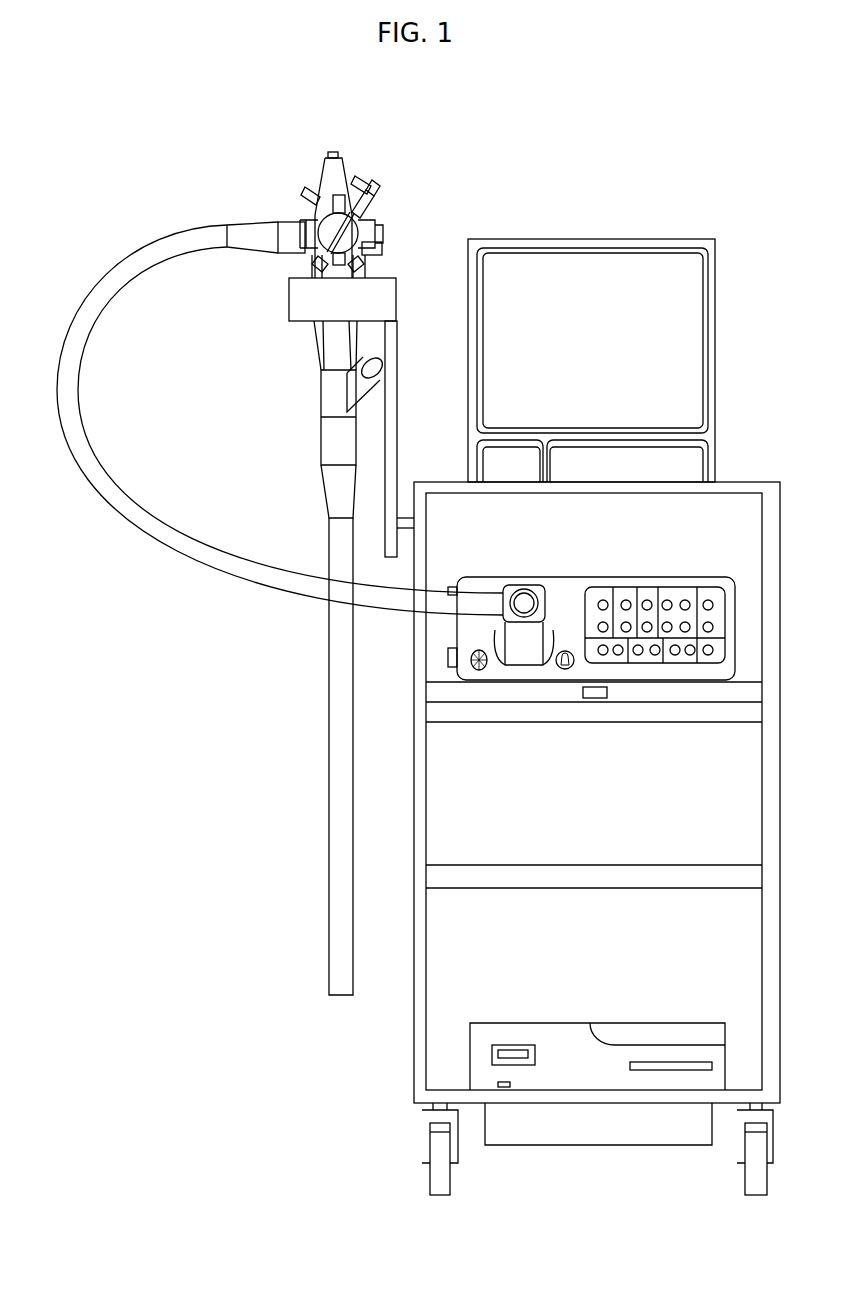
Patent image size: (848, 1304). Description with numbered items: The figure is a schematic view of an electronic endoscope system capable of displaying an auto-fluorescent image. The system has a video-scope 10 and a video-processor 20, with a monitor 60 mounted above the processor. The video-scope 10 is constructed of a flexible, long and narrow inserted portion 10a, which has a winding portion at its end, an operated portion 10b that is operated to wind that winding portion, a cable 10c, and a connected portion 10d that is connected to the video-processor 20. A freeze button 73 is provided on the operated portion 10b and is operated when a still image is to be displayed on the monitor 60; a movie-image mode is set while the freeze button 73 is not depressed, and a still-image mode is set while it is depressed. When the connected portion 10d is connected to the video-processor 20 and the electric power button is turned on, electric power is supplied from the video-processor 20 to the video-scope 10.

The video-scope 10 is at (235, 647).
The inserted portion 10a is at (331, 825).
The operated portion 10b is at (348, 163).
The cable 10c is at (83, 487).
The connected portion 10d is at (547, 585).
The video-processor 20 is at (736, 602).
The monitor 60 is at (716, 340).
The freeze button 73 is at (362, 180).